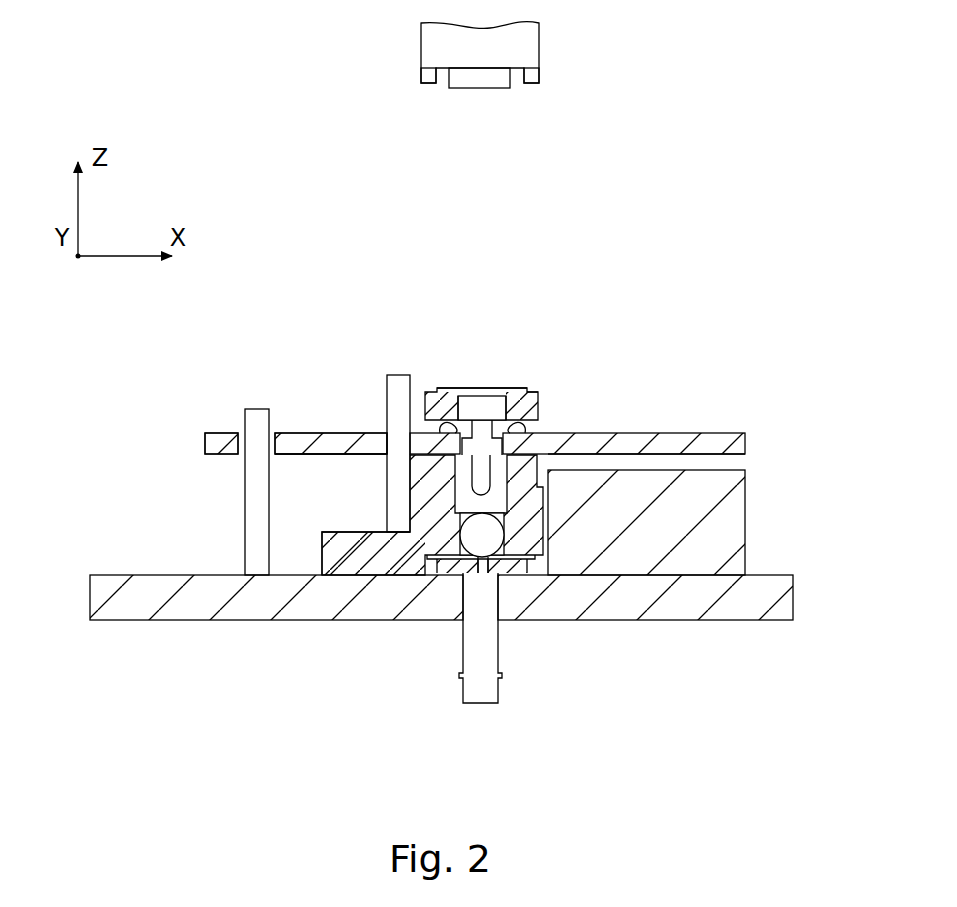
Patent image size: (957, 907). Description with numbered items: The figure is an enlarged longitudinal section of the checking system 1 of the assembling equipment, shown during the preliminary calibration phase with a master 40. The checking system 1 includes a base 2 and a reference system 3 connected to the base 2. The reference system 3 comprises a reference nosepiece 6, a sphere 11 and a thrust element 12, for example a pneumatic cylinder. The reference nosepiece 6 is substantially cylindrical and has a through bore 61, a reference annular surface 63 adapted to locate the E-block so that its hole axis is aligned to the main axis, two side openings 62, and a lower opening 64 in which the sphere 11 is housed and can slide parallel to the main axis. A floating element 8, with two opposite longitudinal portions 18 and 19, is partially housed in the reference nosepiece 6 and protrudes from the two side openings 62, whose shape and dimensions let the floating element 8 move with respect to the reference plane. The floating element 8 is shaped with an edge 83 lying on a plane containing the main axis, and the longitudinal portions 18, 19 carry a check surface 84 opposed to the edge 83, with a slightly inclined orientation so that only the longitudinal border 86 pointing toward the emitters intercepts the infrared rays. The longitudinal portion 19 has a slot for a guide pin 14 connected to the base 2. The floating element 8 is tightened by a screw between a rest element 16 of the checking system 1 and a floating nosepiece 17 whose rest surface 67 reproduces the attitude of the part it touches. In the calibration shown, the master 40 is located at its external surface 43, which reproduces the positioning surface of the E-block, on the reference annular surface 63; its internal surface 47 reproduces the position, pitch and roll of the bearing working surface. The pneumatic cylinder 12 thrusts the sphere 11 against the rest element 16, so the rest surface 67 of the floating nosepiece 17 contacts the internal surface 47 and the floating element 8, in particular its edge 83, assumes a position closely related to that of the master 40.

The checking system 1 is at (727, 265).
The base 2 is at (135, 605).
The reference system 3 is at (535, 320).
The reference nosepiece 6 is at (524, 393).
The floating element 8 is at (511, 440).
The sphere 11 is at (473, 540).
The thrust element 12 is at (483, 690).
The guide pin 14 is at (258, 517).
The rest element 16 is at (463, 502).
The floating nosepiece 17 is at (468, 393).
The longitudinal portion 18 is at (715, 440).
The longitudinal portion 19 is at (218, 440).
The master 40 is at (556, 44).
The external surface 43 is at (427, 87).
The internal surface 47 is at (465, 92).
The through bore 61 is at (452, 408).
The side openings 62 is at (440, 428).
The reference annular surface 63 is at (533, 387).
The lower opening 64 is at (500, 548).
The rest surface 67 is at (505, 391).
The edge 83 is at (345, 432).
The check surface 84 is at (352, 460).
The longitudinal border 86 is at (703, 455).